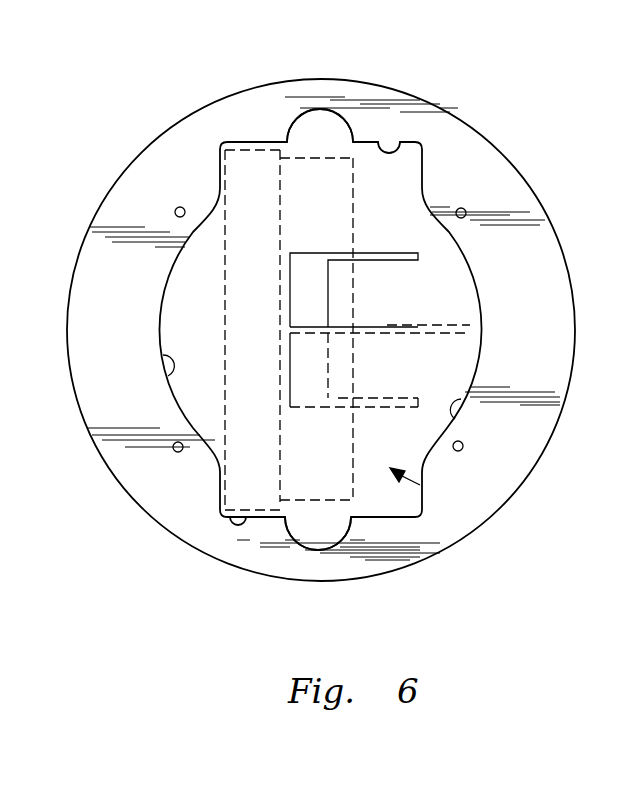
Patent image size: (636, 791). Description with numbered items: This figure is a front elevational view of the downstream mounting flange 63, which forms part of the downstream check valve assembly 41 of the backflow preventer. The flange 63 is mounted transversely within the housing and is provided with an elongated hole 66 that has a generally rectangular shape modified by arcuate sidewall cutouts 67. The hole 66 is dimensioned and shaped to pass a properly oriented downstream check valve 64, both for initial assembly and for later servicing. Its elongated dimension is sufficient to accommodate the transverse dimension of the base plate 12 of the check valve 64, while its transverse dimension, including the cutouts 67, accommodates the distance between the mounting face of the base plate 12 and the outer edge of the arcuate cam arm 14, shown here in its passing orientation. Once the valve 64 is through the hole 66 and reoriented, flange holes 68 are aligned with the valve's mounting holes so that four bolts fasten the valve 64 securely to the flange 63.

The base plate 12 is at (258, 495).
The cam arm 14 is at (445, 323).
The downstream check valve assembly 41 is at (423, 487).
The downstream mounting flange 63 is at (538, 241).
The downstream check valve 64 is at (245, 145).
The elongated hole 66 is at (400, 143).
The arcuate sidewall cutouts 67 is at (180, 372).
The flange holes 68 is at (180, 208).